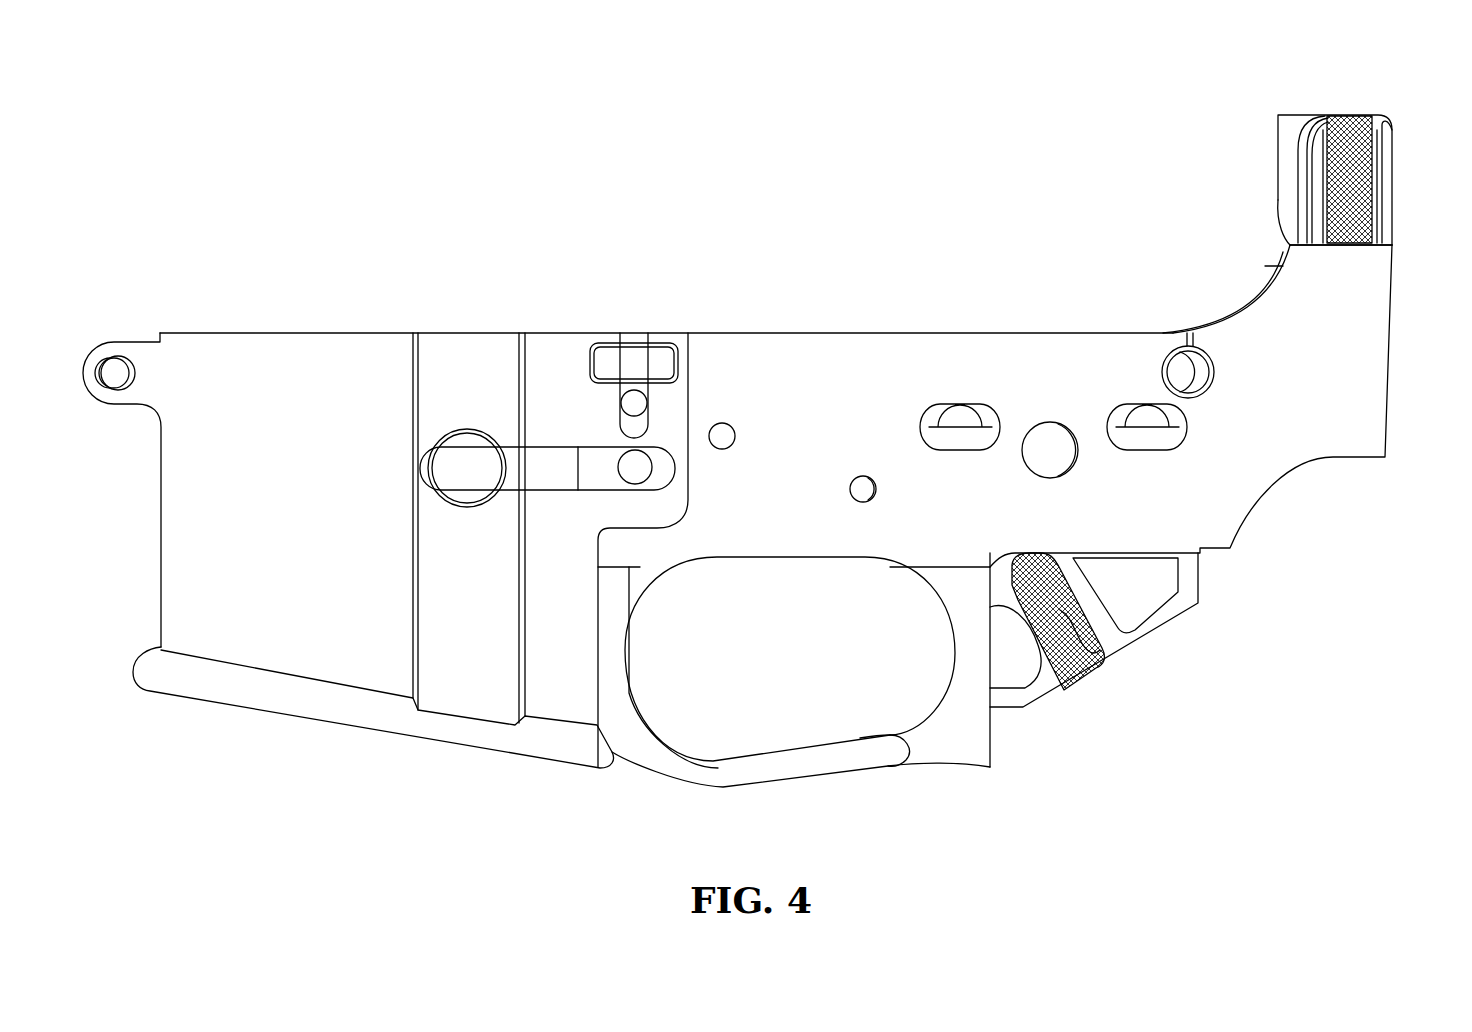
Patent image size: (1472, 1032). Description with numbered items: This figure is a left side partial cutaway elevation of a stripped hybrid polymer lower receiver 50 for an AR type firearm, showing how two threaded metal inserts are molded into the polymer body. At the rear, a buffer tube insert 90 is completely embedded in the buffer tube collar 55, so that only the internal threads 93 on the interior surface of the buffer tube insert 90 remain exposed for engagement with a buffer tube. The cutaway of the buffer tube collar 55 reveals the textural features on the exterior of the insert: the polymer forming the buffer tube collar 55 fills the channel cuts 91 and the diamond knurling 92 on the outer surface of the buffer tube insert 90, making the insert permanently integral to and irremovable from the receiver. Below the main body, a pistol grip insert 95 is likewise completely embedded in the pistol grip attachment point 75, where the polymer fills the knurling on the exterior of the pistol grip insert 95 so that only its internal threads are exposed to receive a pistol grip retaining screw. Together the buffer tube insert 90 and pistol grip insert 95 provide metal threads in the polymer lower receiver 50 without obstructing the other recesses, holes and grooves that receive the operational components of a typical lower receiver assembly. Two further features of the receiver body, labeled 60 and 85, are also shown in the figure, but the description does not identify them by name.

The hybrid polymer lower receiver 50 is at (190, 260).
The buffer tube collar 55 is at (1328, 258).
The magazine well 60 is at (240, 650).
The pistol grip attachment point 75 is at (1165, 622).
The trigger guard 85 is at (820, 772).
The buffer tube insert 90 is at (1331, 141).
The channel cuts 91 is at (1378, 219).
The diamond knurling 92 is at (1346, 127).
The internal threads 93 is at (1305, 200).
The pistol grip insert 95 is at (1082, 672).